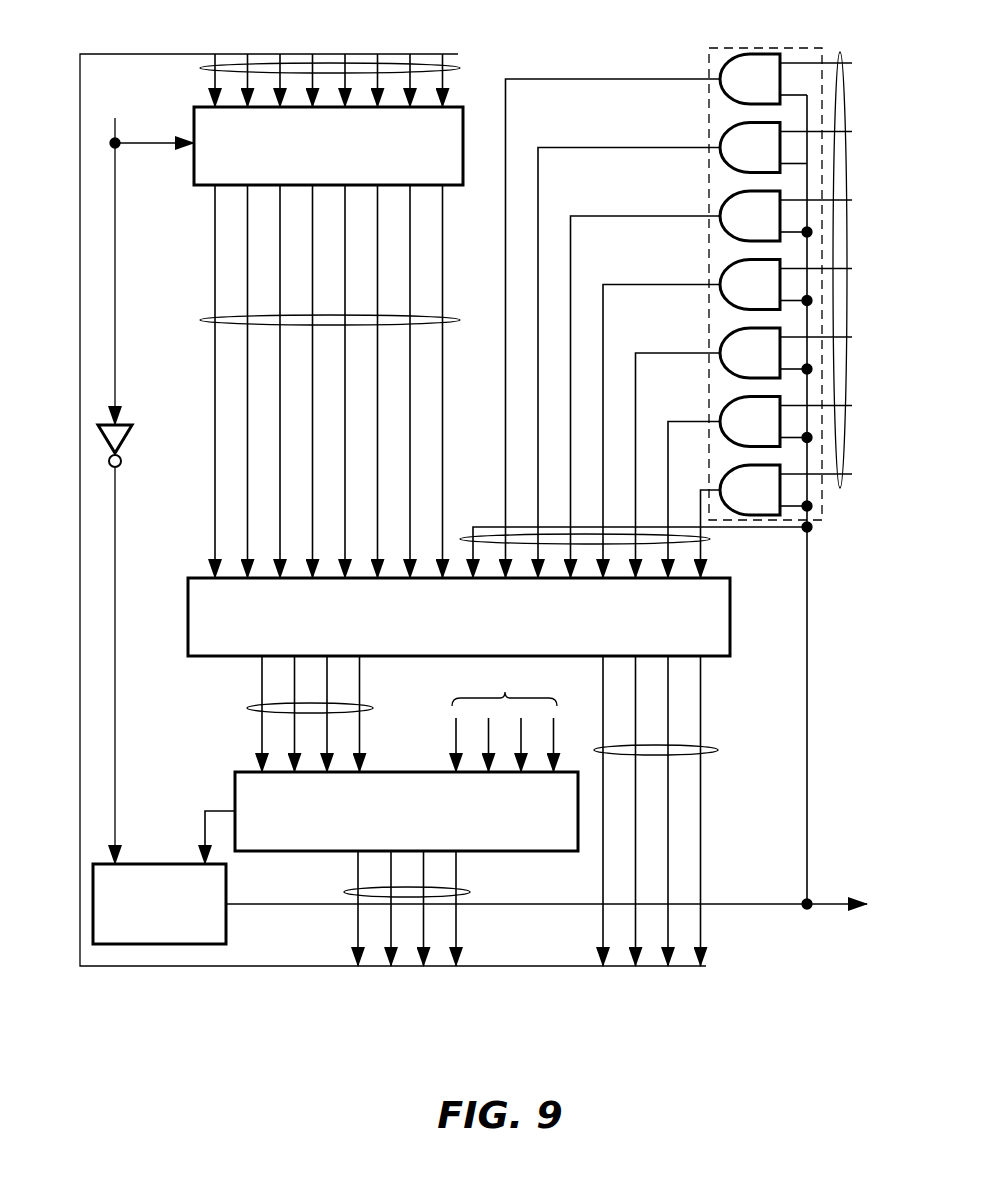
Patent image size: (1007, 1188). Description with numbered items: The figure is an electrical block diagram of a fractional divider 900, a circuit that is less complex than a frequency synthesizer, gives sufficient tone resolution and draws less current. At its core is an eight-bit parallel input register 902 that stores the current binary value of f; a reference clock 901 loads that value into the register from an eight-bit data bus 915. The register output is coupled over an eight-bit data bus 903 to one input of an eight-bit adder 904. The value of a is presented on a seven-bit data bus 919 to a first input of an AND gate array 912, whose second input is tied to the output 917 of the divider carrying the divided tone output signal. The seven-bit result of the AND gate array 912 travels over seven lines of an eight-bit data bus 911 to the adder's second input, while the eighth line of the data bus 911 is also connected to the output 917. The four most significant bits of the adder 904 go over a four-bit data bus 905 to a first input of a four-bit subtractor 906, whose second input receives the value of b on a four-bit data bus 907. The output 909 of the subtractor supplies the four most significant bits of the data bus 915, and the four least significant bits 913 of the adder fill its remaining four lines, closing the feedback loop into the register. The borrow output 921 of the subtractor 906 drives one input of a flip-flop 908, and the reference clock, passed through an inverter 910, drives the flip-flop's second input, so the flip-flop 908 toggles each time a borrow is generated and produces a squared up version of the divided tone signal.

The fractional divider 900 is at (618, 1084).
The reference clock 901 is at (146, 257).
The 8-bit parallel input register 902 is at (455, 92).
The 8-bit data bus 903 is at (210, 312).
The 8-bit adder 904 is at (196, 574).
The 4-bit data bus 905 is at (248, 700).
The 4-bit subtractor 906 is at (244, 768).
The 4-bit data bus 907 is at (504, 719).
The flip-flop 908 is at (232, 910).
The output of the 4-bit subtractor 909 is at (478, 890).
The inverter 910 is at (130, 428).
The 8-bit data bus 911 is at (712, 543).
The AND gate array 912 is at (727, 45).
The four least significant bits of the 8-bit adder 913 is at (716, 742).
The 8-bit data bus 915 is at (455, 58).
The output of the fractional divider 917 is at (832, 910).
The 7-bit data bus 919 is at (843, 56).
The borrow output 921 is at (212, 802).